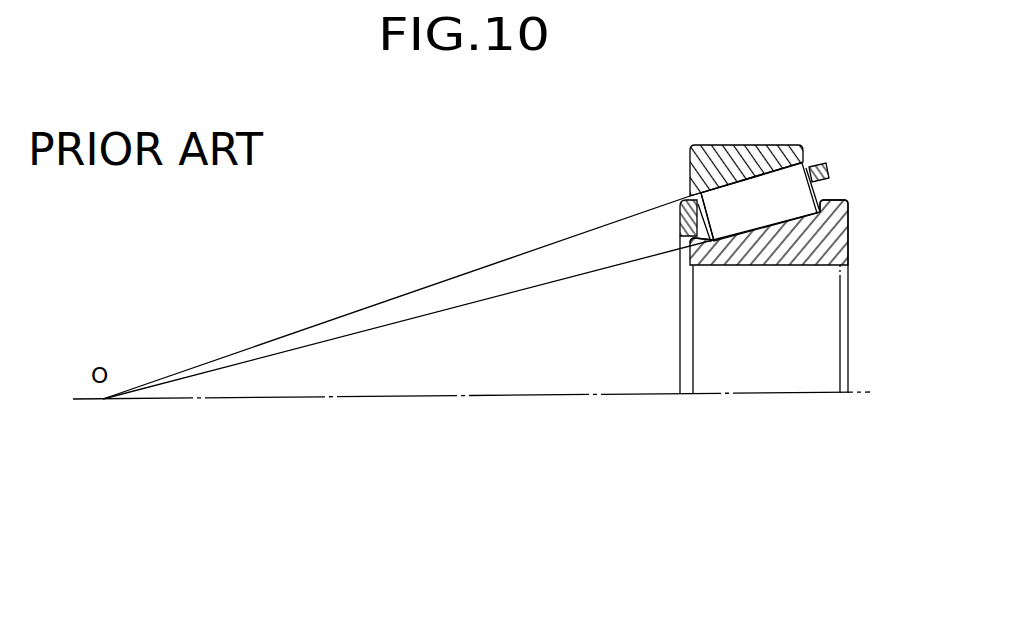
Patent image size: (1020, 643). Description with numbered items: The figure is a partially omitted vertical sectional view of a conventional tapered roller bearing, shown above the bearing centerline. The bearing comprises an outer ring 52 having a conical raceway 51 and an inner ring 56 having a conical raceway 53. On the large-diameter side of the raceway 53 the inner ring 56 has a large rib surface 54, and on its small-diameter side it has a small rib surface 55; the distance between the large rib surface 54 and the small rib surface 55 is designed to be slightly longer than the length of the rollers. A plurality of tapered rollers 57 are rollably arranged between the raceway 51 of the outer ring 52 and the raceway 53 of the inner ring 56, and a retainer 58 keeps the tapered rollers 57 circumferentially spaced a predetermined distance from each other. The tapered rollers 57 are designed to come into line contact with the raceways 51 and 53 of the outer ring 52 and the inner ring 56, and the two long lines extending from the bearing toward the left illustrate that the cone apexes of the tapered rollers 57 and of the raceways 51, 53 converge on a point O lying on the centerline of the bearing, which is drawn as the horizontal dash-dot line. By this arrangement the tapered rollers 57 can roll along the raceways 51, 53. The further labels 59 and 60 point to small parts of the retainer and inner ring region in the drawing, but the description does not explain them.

The conical raceway of the outer ring 51 is at (773, 180).
The outer ring 52 is at (732, 153).
The conical raceway of the inner ring 53 is at (773, 232).
The large rib surface 54 is at (836, 197).
The small rib surface 55 is at (714, 244).
The inner ring 56 is at (813, 250).
The tapered rollers 57 is at (693, 147).
The retainer 58 is at (680, 212).
The cage large-diameter ring 59 is at (827, 181).
The small rib of inner ring 60 is at (690, 238).